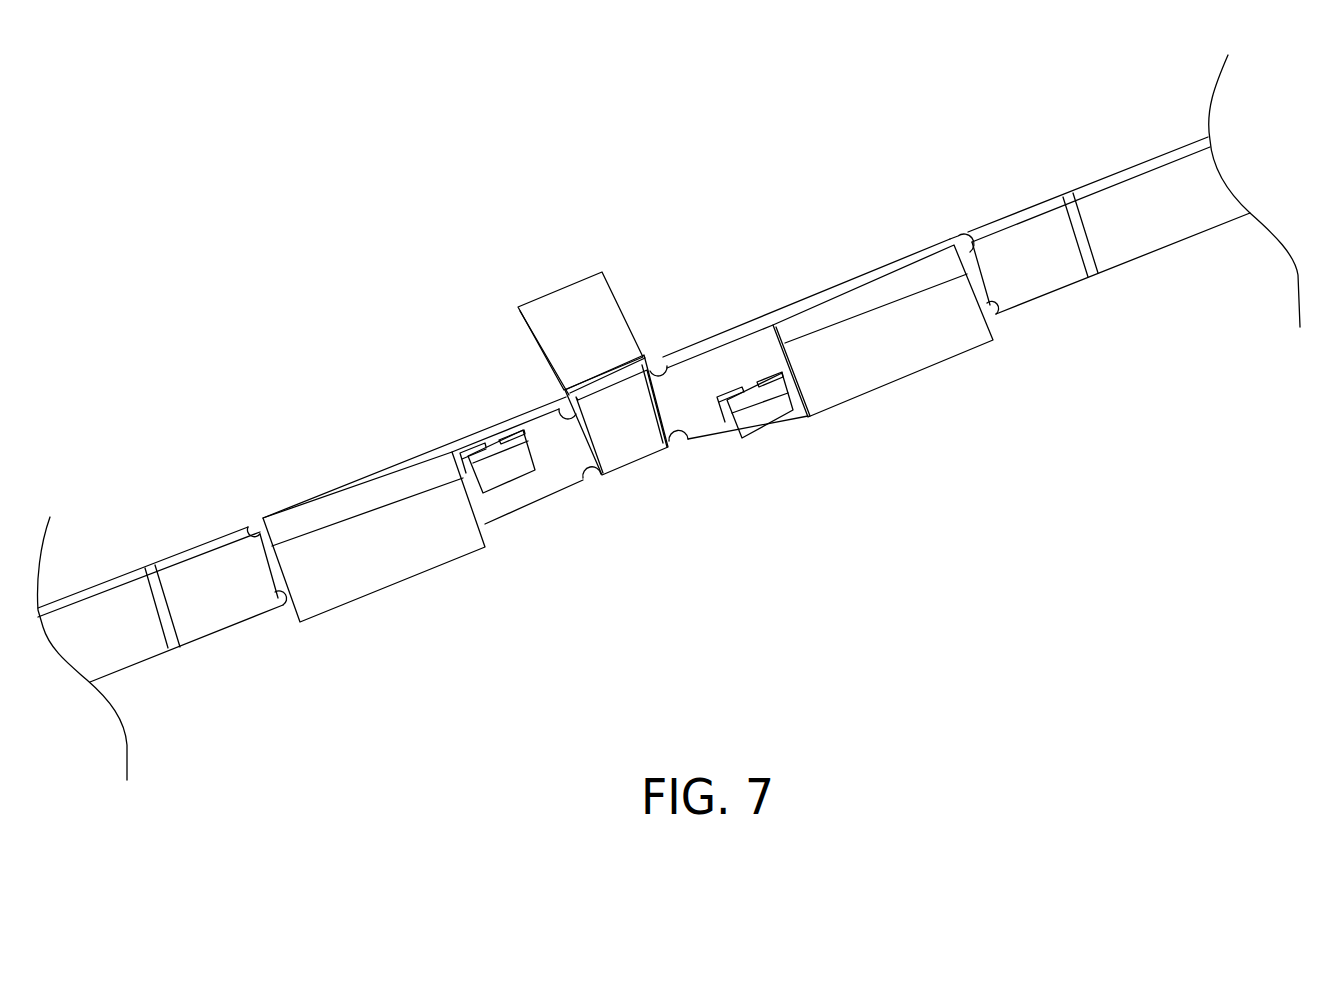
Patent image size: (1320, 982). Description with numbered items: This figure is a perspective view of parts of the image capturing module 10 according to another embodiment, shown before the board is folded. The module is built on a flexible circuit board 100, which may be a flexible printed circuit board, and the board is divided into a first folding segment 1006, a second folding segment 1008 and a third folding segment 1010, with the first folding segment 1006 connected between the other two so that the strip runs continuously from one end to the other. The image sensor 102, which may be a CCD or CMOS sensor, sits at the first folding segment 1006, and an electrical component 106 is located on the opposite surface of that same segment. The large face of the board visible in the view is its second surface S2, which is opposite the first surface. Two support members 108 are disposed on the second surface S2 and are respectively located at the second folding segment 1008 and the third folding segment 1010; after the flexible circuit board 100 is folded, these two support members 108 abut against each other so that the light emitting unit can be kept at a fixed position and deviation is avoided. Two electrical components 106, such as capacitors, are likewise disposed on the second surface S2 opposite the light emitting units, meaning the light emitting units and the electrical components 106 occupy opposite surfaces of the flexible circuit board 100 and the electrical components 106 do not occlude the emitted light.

The image capturing module 10 is at (176, 148).
The flexible circuit board 100 is at (190, 548).
The image sensor 102 is at (565, 287).
The electrical component 106 is at (505, 472).
The support member 108 is at (383, 562).
The first folding segment 1006 is at (640, 465).
The second folding segment 1008 is at (815, 294).
The third folding segment 1010 is at (368, 476).
The second surface S2 is at (694, 386).